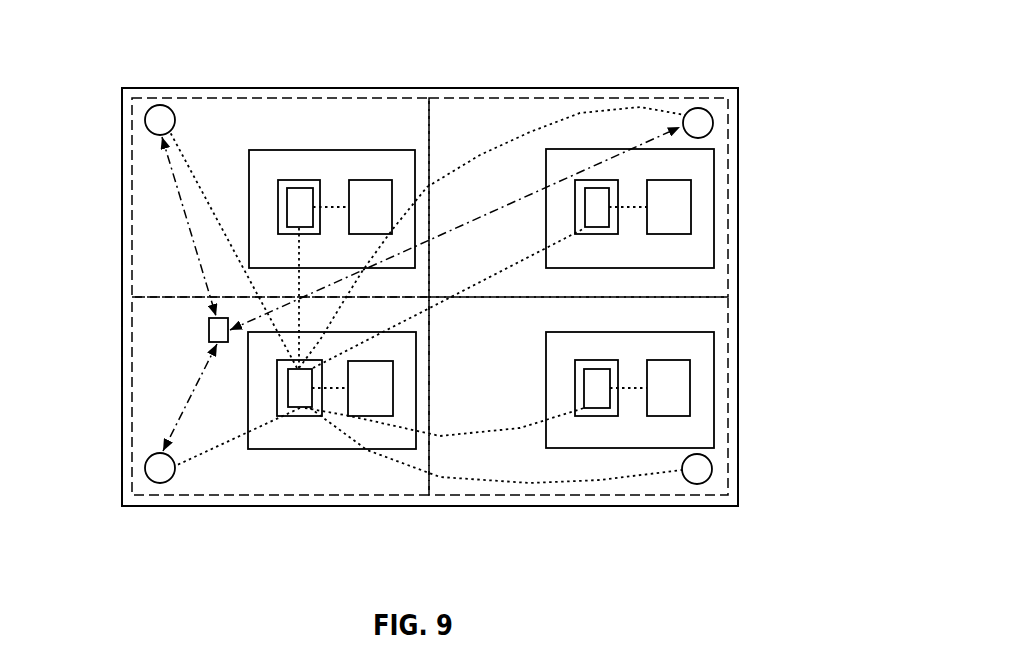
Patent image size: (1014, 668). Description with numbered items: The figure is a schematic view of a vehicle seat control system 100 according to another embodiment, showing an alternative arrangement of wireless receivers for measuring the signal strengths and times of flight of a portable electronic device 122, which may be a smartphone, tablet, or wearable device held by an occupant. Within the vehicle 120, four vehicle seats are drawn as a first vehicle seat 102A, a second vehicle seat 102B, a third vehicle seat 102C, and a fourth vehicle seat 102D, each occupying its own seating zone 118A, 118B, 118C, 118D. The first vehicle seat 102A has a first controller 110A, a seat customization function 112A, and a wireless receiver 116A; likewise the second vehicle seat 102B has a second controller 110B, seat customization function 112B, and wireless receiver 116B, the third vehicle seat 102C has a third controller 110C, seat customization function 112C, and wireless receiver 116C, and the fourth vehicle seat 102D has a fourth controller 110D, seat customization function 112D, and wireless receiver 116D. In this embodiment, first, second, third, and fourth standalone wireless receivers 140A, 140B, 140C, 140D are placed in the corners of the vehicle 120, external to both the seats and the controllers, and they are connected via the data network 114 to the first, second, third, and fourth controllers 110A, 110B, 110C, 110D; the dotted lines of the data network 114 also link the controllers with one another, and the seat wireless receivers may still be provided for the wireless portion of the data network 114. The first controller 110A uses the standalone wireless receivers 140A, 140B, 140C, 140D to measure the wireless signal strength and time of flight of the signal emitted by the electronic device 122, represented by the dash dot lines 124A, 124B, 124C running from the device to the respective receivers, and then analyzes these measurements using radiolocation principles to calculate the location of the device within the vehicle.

The system 100 is at (130, 48).
The first vehicle seat 102A is at (330, 449).
The second vehicle seat 102B is at (332, 150).
The third vehicle seat 102C is at (640, 448).
The fourth vehicle seat 102D is at (613, 149).
The first controller 110A is at (300, 408).
The second controller 110B is at (300, 180).
The third controller 110C is at (600, 417).
The fourth controller 110D is at (598, 180).
The seat customization function 112A is at (370, 417).
The seat customization function 112B is at (370, 180).
The seat customization function 112C is at (667, 417).
The seat customization function 112D is at (668, 178).
The data network 114 is at (518, 260).
The wireless receiver 116A is at (287, 393).
The wireless receiver 116B is at (287, 212).
The wireless receiver 116C is at (597, 370).
The wireless receiver 116D is at (598, 227).
The seating zone 118A is at (132, 440).
The seating zone 118B is at (132, 155).
The seating zone 118C is at (730, 470).
The seating zone 118D is at (728, 122).
The vehicle 120 is at (457, 88).
The portable electronic device 122 is at (208, 332).
The dash dot line 124A is at (187, 400).
The dash dot line 124B is at (202, 267).
The dash dot line 124C is at (513, 200).
The first standalone wireless receiver 140A is at (160, 470).
The second standalone wireless receiver 140B is at (146, 118).
The third standalone wireless receiver 140C is at (698, 472).
The fourth standalone wireless receiver 140D is at (697, 123).